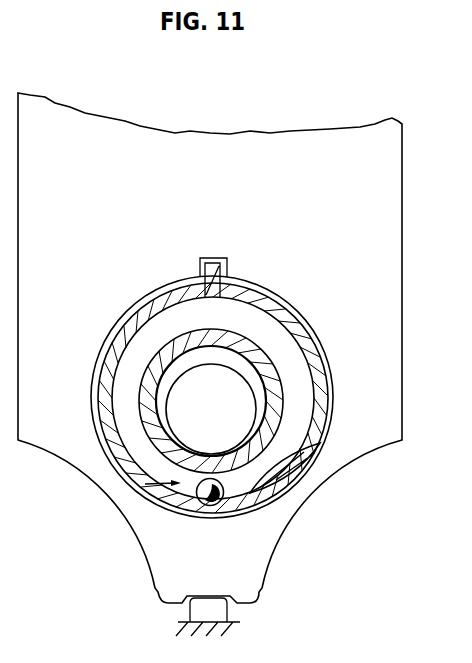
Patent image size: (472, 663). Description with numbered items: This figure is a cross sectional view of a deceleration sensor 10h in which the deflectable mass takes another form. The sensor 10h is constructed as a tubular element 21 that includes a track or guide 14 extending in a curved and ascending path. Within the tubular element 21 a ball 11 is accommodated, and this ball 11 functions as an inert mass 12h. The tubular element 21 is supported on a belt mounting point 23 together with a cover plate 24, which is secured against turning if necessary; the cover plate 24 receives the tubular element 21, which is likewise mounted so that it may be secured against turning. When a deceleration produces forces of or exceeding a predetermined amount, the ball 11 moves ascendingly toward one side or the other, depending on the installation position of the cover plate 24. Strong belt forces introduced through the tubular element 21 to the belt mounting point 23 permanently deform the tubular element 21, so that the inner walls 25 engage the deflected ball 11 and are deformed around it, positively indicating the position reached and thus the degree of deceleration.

The sensor 10h is at (90, 393).
The ball 11 is at (200, 503).
The inert mass 12h is at (145, 484).
The track or guide 14 is at (300, 440).
The tubular element 21 is at (283, 302).
The belt mounting point 23 is at (182, 373).
The cover plate 24 is at (394, 339).
The inner walls 25 is at (306, 466).